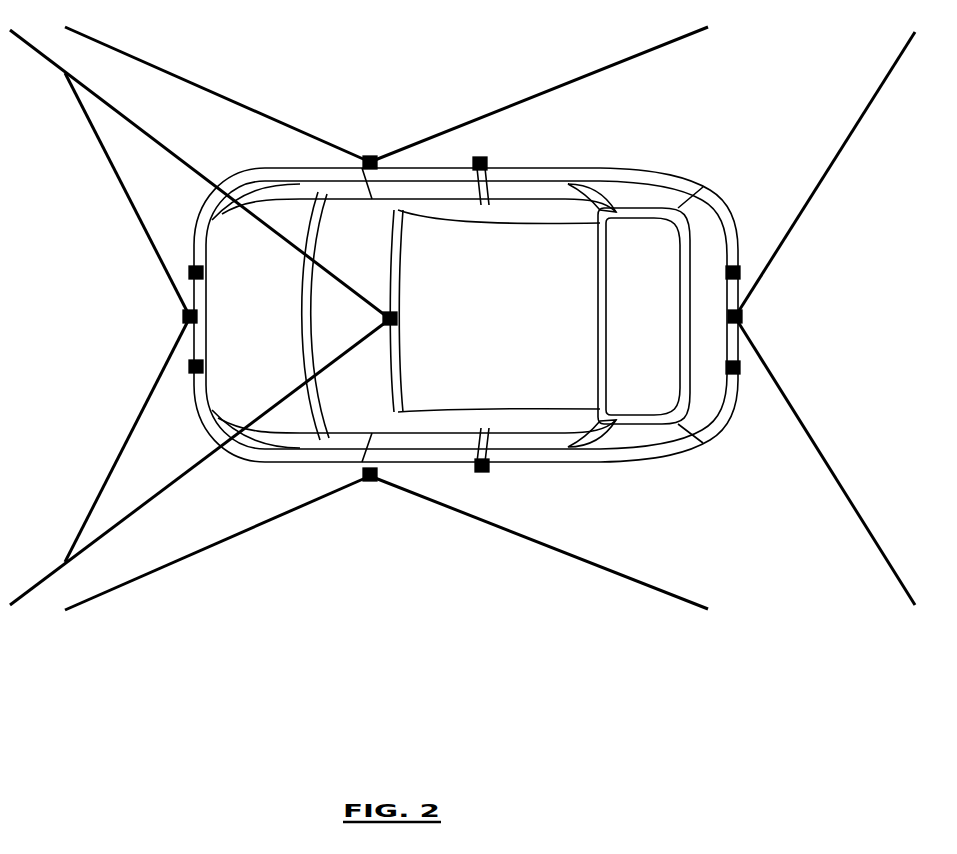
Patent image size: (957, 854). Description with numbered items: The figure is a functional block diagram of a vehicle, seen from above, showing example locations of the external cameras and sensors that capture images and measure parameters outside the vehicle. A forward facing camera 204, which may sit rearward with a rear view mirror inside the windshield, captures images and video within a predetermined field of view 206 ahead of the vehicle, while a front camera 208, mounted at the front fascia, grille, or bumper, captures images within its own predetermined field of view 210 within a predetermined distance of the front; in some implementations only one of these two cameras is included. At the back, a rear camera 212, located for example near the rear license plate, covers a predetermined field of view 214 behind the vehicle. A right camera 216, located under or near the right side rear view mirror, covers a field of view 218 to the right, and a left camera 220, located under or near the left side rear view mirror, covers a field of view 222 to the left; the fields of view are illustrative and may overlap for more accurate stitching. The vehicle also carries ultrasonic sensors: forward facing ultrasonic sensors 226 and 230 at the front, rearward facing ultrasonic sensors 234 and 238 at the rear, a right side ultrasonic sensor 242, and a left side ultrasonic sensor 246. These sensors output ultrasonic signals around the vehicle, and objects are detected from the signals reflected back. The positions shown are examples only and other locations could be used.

The forward facing camera 204 is at (400, 318).
The predetermined field of view 206 is at (173, 152).
The front camera 208 is at (183, 317).
The predetermined field of view 210 is at (107, 157).
The rear camera 212 is at (745, 317).
The predetermined field of view 214 is at (835, 165).
The right camera 216 is at (370, 157).
The predetermined field of view 218 is at (147, 62).
The left camera 220 is at (372, 480).
The predetermined field of view 222 is at (490, 523).
The forward facing ultrasonic sensor 226 is at (190, 272).
The forward facing ultrasonic sensor 230 is at (190, 367).
The rearward facing ultrasonic sensor 234 is at (740, 273).
The rearward facing ultrasonic sensor 238 is at (740, 368).
The right side ultrasonic sensor 242 is at (485, 160).
The left side ultrasonic sensor 246 is at (488, 472).